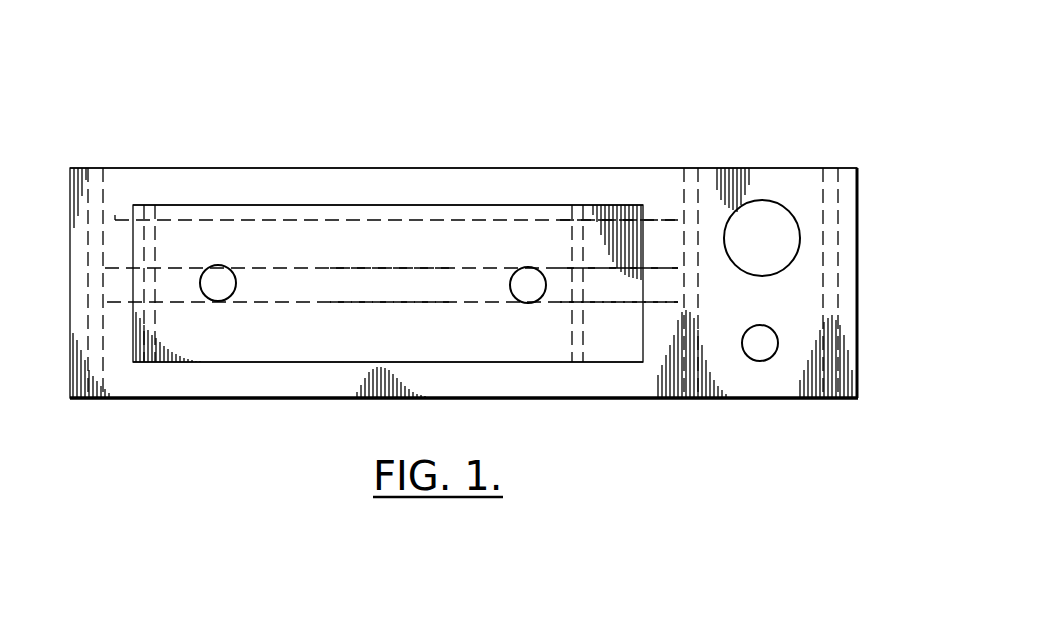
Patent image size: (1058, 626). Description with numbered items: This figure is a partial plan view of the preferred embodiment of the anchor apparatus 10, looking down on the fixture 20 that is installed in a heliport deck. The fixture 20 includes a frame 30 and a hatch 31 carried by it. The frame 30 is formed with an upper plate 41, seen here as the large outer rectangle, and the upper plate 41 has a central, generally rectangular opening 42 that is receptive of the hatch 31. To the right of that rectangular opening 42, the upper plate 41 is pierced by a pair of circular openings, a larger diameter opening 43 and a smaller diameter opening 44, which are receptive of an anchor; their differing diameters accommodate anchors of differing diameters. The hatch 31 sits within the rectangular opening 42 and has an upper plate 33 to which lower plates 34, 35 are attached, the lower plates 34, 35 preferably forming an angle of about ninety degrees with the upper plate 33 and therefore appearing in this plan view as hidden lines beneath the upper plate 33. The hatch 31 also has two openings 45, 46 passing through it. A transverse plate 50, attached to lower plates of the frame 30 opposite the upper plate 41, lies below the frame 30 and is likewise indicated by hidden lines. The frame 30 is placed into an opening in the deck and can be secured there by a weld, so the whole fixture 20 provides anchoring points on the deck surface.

The anchor apparatus 10 is at (445, 240).
The fixture 20 is at (65, 352).
The frame 30 is at (332, 400).
The hatch 31 is at (415, 232).
The upper plate 33 is at (422, 347).
The lower plate 34 is at (148, 258).
The lower plate 35 is at (579, 229).
The upper plate 41 is at (635, 187).
The rectangular opening 42 is at (473, 204).
The larger diameter opening 43 is at (763, 236).
The smaller diameter opening 44 is at (760, 352).
The opening 45 is at (219, 286).
The opening 46 is at (526, 292).
The transverse plate 50 is at (381, 283).